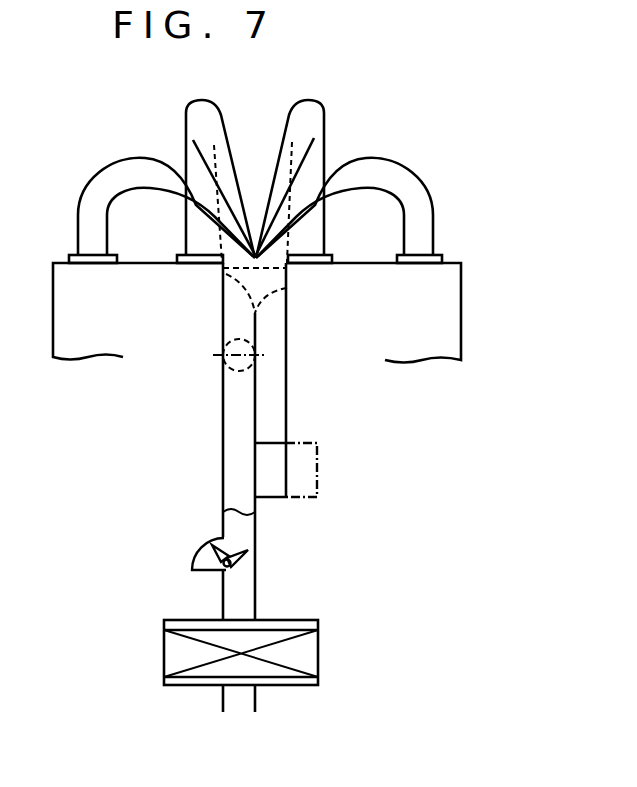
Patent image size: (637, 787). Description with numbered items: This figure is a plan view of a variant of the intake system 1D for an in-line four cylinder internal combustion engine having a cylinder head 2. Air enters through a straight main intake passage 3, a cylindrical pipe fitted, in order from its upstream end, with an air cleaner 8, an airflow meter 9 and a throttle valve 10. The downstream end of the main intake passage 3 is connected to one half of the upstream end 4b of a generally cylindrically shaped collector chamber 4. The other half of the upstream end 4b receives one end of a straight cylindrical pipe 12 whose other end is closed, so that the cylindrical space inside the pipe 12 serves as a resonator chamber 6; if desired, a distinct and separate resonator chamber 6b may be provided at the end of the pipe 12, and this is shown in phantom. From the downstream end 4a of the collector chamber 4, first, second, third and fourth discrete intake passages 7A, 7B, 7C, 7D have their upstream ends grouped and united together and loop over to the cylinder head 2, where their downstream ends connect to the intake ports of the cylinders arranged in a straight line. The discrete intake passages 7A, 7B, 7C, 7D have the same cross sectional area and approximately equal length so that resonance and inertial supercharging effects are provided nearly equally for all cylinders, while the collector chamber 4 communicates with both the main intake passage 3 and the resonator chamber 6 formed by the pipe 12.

The intake system 1D is at (404, 157).
The cylinder head 2 is at (461, 317).
The main intake passage 3 is at (223, 482).
The collector chamber 4 is at (273, 281).
The downstream end of the collector chamber 4a is at (223, 283).
The upstream end of the collector chamber 4b is at (223, 308).
The resonator chamber 6 is at (275, 403).
The separate resonator chamber 6b is at (317, 460).
The first discrete intake passage 7A is at (420, 190).
The second discrete intake passage 7B is at (324, 115).
The third discrete intake passage 7C is at (185, 122).
The fourth discrete intake passage 7D is at (103, 178).
The air cleaner 8 is at (318, 650).
The airflow meter 9 is at (243, 553).
The throttle valve 10 is at (230, 380).
The straight pipe 12 is at (286, 343).